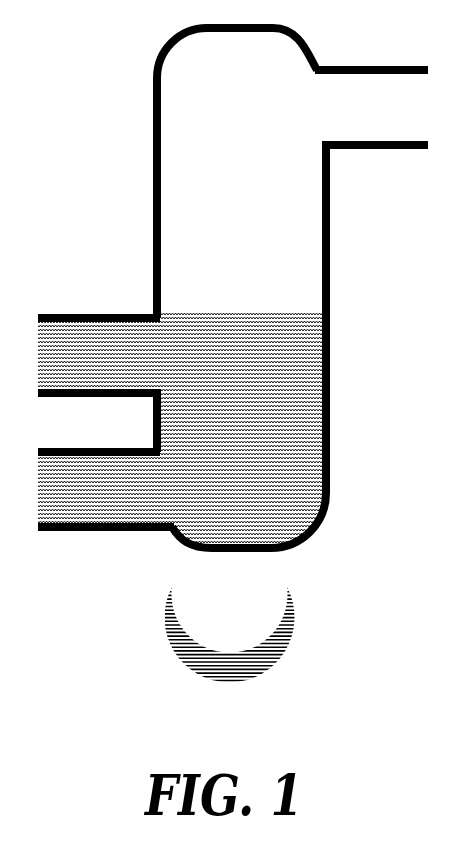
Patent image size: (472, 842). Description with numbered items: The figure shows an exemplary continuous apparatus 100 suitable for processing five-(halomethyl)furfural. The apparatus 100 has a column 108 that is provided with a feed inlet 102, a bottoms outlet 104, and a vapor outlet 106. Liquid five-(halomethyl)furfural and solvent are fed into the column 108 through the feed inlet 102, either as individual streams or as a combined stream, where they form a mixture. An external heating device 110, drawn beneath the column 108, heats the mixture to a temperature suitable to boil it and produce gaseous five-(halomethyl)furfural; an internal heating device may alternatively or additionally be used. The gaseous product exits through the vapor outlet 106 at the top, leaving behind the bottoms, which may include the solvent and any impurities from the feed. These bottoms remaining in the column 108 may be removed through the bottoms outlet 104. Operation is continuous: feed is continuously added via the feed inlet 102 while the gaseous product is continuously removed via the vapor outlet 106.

The apparatus 100 is at (230, 352).
The feed inlet 102 is at (99, 385).
The bottoms outlet 104 is at (106, 489).
The vapor outlet 106 is at (371, 107).
The column 108 is at (241, 288).
The external heating device 110 is at (274, 634).